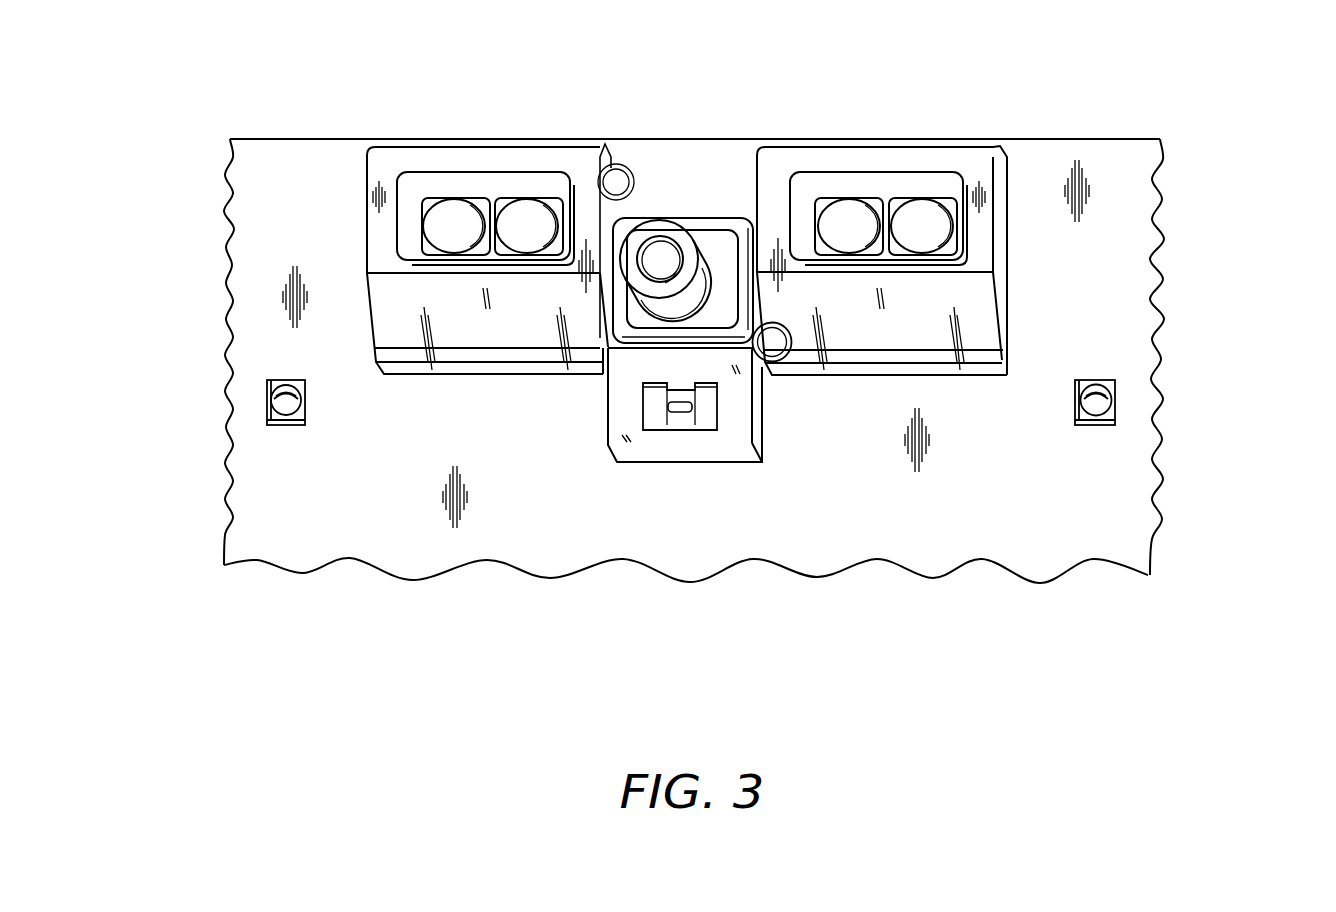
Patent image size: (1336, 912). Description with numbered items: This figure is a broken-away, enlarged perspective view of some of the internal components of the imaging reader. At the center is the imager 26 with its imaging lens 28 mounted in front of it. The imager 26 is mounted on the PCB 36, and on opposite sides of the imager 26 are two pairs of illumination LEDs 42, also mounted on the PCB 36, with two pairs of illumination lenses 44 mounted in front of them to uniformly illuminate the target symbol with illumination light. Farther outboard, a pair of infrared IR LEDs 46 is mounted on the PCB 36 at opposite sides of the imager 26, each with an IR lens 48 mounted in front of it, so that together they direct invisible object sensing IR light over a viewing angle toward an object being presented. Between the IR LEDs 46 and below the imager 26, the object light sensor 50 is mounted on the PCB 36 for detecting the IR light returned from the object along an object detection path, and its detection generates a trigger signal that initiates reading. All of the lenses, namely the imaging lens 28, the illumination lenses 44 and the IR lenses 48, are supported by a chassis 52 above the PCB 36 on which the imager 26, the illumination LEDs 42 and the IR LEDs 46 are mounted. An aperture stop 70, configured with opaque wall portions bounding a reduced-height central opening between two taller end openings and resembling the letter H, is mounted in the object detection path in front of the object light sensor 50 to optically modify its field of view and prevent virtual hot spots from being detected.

The imager 26 is at (651, 182).
The imaging lens 28 is at (657, 230).
The PCB 36 is at (244, 347).
The illumination LEDs 42 is at (673, 198).
The illumination lenses 44 is at (913, 213).
The IR LEDs 46 is at (694, 418).
The IR lenses 48 is at (267, 398).
The object light sensor 50 is at (680, 412).
The chassis 52 is at (943, 373).
The aperture stop 70 is at (720, 403).